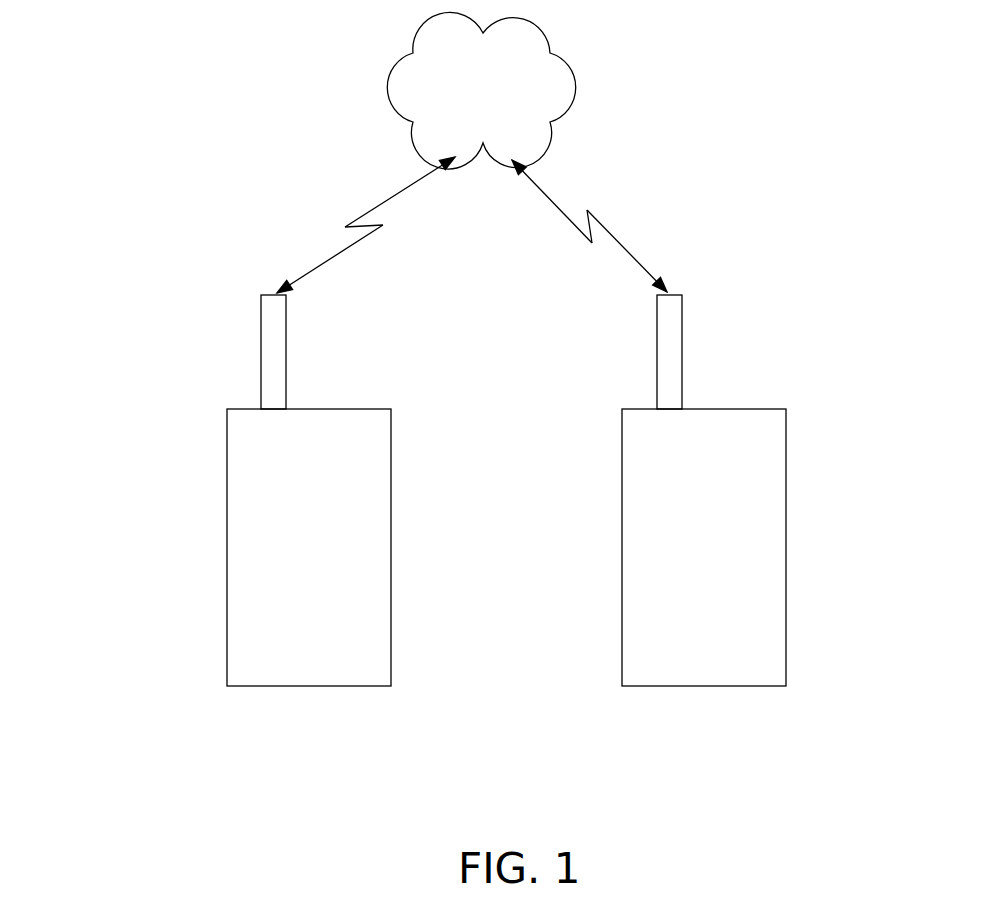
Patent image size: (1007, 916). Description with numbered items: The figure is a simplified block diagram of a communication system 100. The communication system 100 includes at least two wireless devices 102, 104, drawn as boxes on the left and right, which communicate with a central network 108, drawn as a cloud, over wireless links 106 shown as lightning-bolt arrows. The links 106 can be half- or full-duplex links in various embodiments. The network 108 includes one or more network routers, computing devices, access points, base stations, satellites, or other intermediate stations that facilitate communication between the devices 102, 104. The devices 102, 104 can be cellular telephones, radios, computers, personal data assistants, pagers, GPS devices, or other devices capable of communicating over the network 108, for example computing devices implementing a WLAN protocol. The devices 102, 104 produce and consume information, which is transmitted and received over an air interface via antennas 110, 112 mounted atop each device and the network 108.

The communication system 100 is at (143, 63).
The wireless device 102 is at (227, 548).
The wireless device 104 is at (787, 548).
The wireless link 106 is at (372, 208).
The network 108 is at (390, 85).
The antenna 110 is at (260, 350).
The antenna 112 is at (680, 350).